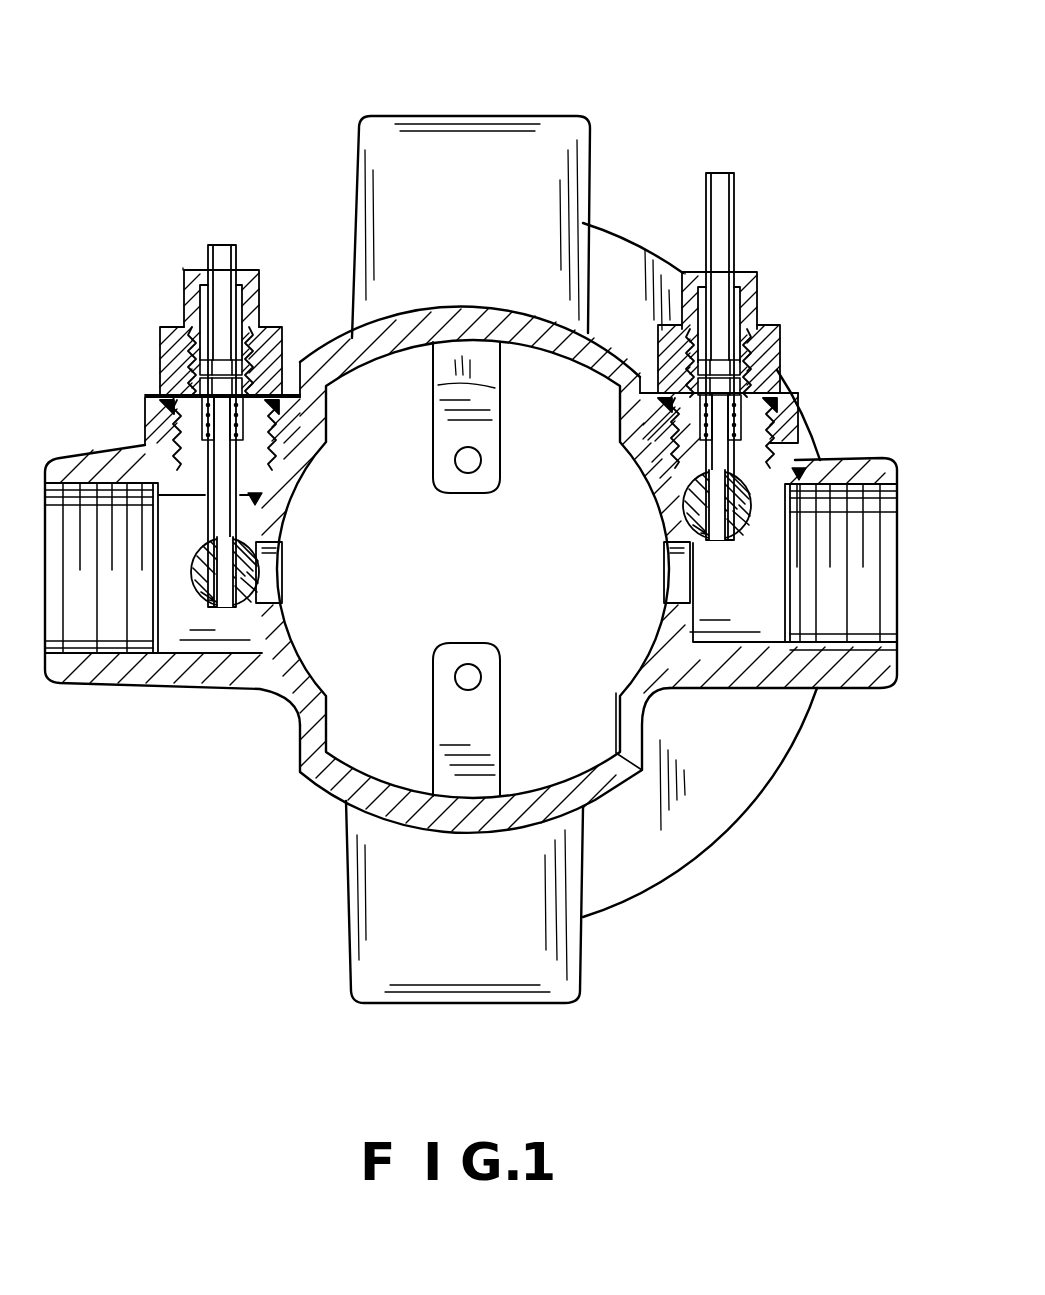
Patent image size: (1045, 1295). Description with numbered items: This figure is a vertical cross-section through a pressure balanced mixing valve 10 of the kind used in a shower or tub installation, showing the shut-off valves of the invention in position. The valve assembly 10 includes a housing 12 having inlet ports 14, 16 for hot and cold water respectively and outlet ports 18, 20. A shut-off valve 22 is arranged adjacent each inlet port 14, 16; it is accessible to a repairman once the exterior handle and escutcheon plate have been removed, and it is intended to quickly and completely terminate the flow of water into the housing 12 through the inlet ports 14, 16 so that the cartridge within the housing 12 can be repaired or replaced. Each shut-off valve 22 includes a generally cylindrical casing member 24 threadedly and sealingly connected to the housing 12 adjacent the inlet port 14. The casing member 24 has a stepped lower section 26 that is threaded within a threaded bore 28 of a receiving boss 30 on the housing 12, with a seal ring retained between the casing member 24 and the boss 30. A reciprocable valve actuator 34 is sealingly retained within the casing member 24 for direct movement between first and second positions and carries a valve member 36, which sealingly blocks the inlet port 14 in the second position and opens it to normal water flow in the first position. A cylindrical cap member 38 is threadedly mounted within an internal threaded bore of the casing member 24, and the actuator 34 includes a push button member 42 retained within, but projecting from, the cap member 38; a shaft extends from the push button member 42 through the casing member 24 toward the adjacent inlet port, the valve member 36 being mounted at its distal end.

The pressure balanced mixing valve 10 is at (459, 88).
The housing 12 is at (452, 310).
The inlet port 14 is at (268, 583).
The inlet port 16 is at (670, 580).
The outlet port 18 is at (520, 140).
The outlet port 20 is at (543, 970).
The shut-off valve 22 is at (183, 268).
The casing member 24 is at (152, 350).
The stepped lower section 26 is at (175, 445).
The threaded bore 28 is at (253, 492).
The receiving boss 30 is at (148, 410).
The valve actuator 34 is at (262, 348).
The valve member 36 is at (285, 555).
The cap member 38 is at (190, 290).
The push button member 42 is at (219, 247).